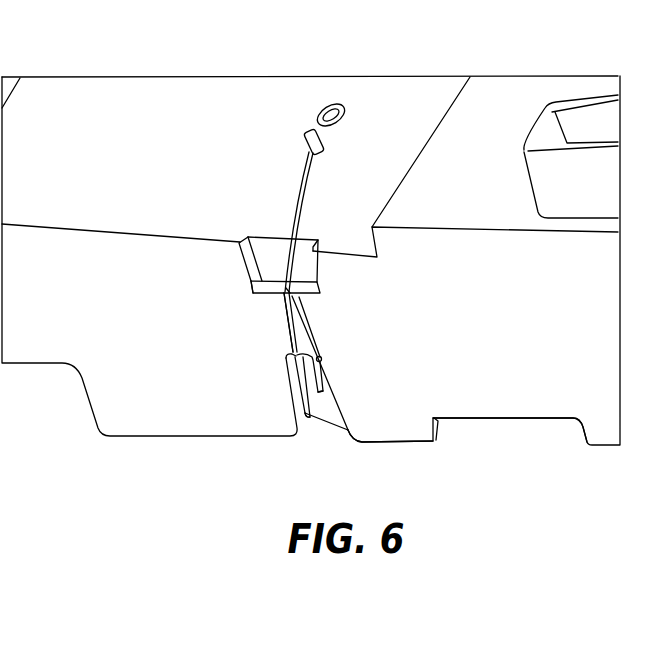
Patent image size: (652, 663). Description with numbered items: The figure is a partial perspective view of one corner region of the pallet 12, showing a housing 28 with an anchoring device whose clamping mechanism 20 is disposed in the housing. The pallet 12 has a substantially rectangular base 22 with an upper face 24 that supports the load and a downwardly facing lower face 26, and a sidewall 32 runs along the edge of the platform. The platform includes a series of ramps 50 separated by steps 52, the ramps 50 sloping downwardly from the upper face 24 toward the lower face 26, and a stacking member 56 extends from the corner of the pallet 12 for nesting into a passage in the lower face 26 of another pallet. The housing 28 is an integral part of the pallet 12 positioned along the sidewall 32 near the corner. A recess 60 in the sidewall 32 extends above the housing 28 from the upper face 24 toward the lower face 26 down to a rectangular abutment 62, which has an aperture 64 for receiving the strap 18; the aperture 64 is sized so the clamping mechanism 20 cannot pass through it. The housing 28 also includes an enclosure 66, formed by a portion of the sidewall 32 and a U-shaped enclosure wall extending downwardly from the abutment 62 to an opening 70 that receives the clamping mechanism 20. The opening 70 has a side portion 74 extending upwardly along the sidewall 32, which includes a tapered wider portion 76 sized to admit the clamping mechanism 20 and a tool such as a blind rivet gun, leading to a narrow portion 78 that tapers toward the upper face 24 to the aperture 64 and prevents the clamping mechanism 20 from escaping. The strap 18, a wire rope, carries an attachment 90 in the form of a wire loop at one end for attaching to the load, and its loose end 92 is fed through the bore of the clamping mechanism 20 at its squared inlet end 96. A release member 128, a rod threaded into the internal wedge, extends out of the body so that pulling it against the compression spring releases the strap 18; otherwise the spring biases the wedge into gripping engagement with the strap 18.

The pallet 12 is at (311, 292).
The strap 18 is at (296, 183).
The clamping mechanism 20 is at (302, 338).
The base 22 is at (310, 67).
The upper face 24 is at (517, 100).
The lower face 26 is at (473, 418).
The housing 28 is at (401, 456).
The sidewall 32 is at (118, 339).
The ramps 50 is at (238, 166).
The steps 52 is at (417, 160).
The stacking members 56 is at (587, 194).
The recess 60 is at (305, 237).
The abutment 62 is at (255, 290).
The aperture 64 is at (300, 297).
The enclosure 66 is at (244, 383).
The opening 70 is at (350, 411).
The side portion 74 is at (325, 368).
The tapered wider portion 76 is at (296, 413).
The narrow portion 78 is at (290, 327).
The attachment 90 is at (345, 103).
The loose end 92 is at (308, 420).
The inlet end 96 is at (288, 292).
The release member 128 is at (323, 386).